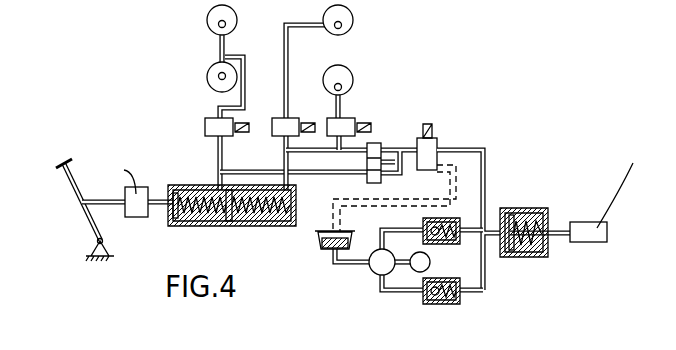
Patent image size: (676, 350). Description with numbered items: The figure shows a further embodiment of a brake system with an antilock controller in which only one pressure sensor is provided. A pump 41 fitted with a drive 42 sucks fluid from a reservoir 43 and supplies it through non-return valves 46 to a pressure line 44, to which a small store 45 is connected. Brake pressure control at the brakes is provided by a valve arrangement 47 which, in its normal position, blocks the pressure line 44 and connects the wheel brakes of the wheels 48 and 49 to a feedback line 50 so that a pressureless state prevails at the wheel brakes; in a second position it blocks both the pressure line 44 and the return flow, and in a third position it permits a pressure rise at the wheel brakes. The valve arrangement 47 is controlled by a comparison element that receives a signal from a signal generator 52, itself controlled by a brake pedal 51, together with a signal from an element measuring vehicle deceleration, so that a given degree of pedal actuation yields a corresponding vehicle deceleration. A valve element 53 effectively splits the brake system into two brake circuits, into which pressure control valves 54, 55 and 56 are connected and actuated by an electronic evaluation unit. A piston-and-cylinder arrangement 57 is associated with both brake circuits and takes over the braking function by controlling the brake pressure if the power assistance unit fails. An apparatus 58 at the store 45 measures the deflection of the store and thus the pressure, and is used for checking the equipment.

The pump 41 is at (372, 268).
The drive 42 is at (431, 262).
The reservoir 43 is at (318, 246).
The pressure line 44 is at (486, 196).
The store 45 is at (535, 253).
The non-return valve 46 is at (423, 220).
The valve arrangement 47 is at (437, 144).
The wheel 48 is at (352, 70).
The wheel 49 is at (208, 73).
The feedback line 50 is at (392, 200).
The brake pedal 51 is at (73, 192).
The signal generator 52 is at (139, 218).
The valve element 53 is at (372, 151).
The pressure control valve 54 is at (342, 125).
The pressure control valve 55 is at (279, 120).
The pressure control valve 56 is at (210, 120).
The piston-and-cylinder arrangement 57 is at (232, 227).
The apparatus for measuring deflection 58 is at (582, 224).